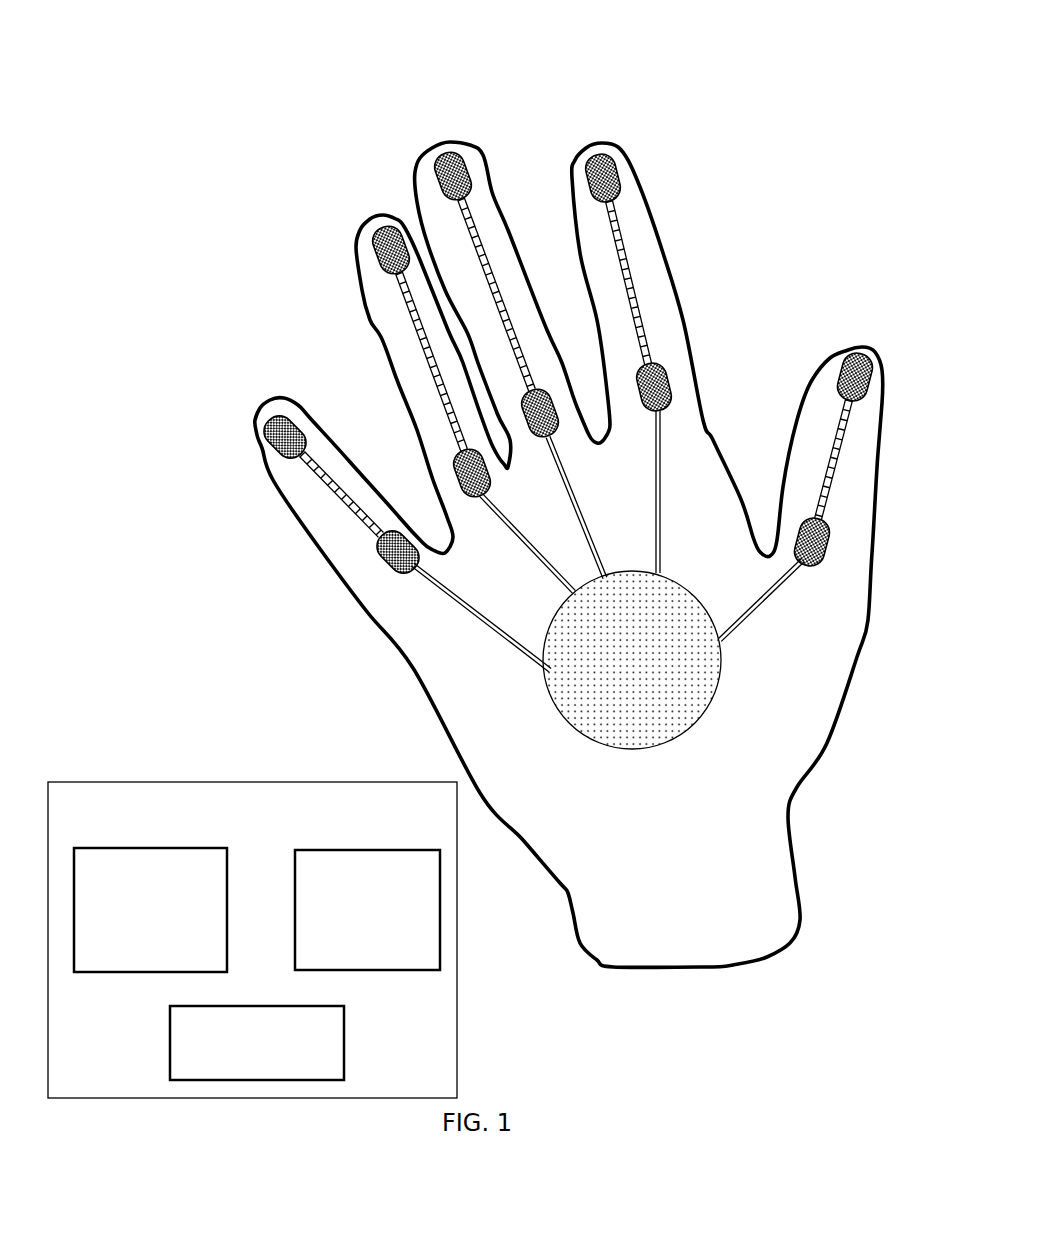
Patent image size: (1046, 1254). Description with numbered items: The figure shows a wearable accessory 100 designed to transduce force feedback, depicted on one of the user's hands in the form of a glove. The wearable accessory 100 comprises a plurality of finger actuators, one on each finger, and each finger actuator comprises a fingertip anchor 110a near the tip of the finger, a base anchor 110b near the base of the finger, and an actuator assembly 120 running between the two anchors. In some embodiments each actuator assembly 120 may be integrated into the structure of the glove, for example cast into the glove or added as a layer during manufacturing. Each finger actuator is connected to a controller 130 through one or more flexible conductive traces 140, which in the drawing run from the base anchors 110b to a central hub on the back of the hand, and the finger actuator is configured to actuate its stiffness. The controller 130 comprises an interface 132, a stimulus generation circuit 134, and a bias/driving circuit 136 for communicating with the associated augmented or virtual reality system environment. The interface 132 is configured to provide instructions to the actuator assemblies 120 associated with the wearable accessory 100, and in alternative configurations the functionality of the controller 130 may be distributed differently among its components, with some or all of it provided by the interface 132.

The wearable accessory 100 is at (45, 131).
The fingertip anchor 110a is at (613, 162).
The base anchor 110b is at (667, 379).
The actuator assembly 120 is at (470, 197).
The controller 130 is at (545, 680).
The interface 132 is at (242, 1066).
The stimulus generation circuit 134 is at (135, 956).
The bias/driving circuit 136 is at (352, 946).
The flexible conductive traces 140 is at (463, 617).